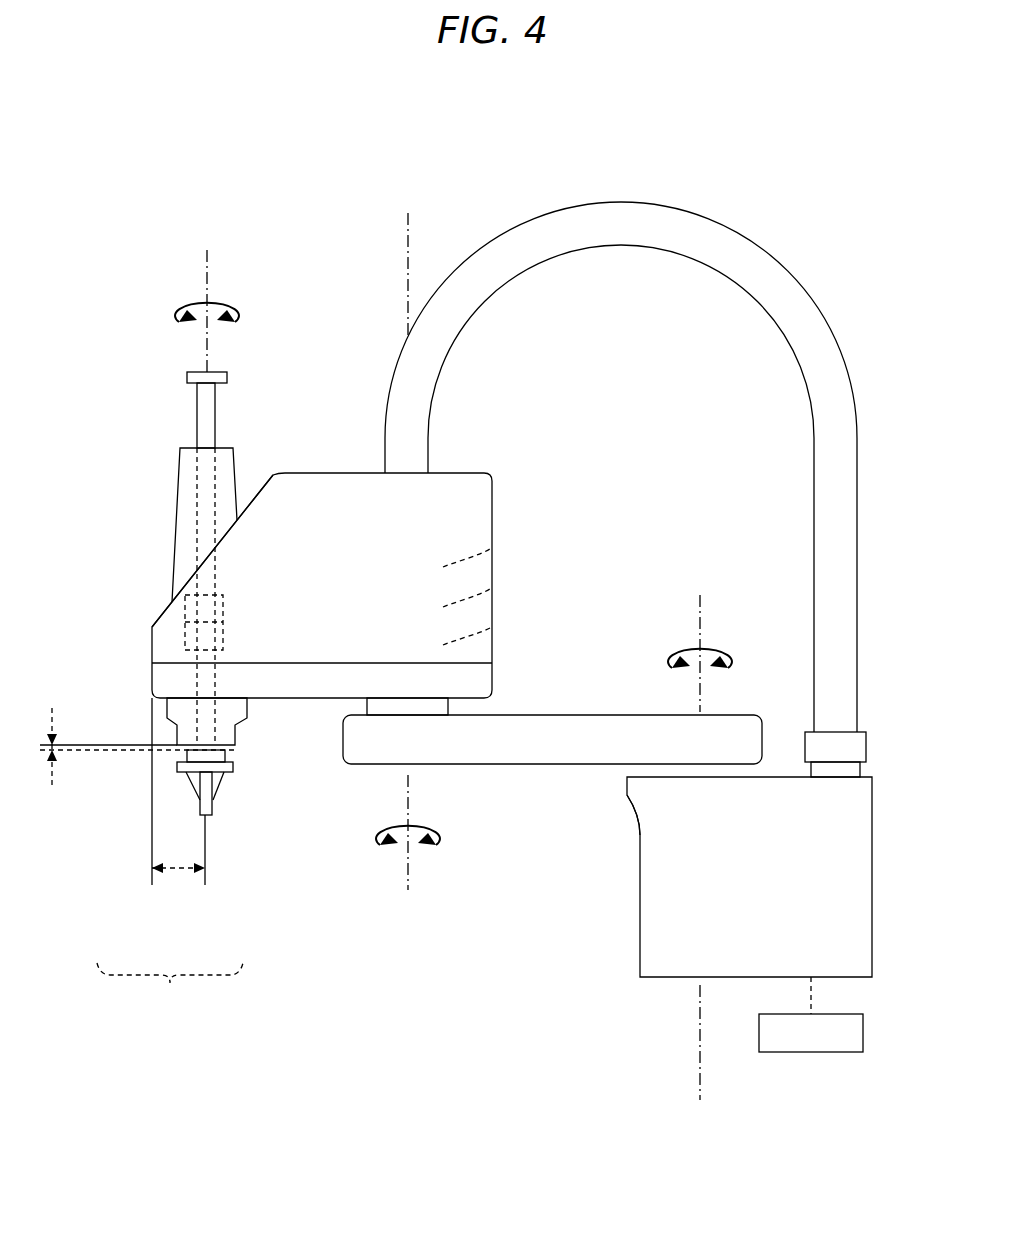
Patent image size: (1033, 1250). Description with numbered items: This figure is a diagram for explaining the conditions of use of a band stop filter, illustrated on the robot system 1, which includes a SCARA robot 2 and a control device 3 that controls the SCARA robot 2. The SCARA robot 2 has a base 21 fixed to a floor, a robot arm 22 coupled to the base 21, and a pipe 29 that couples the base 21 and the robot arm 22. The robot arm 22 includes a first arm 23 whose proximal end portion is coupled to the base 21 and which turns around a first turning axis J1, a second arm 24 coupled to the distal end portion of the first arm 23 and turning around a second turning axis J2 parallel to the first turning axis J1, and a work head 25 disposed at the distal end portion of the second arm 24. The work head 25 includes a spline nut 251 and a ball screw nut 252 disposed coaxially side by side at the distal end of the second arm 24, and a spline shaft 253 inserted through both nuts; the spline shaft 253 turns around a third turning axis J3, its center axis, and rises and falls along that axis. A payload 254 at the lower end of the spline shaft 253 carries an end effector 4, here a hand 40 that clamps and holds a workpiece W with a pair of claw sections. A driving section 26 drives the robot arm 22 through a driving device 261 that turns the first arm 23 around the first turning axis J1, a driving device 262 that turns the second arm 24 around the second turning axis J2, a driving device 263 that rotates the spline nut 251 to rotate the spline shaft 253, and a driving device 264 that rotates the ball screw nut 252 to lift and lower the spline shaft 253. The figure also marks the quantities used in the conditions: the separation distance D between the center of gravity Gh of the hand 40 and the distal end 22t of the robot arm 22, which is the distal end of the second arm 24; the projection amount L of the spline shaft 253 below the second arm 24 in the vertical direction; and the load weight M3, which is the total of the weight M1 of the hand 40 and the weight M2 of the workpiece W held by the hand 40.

The robot system 1 is at (817, 81).
The SCARA robot 2 is at (628, 444).
The control device 3 is at (813, 1052).
The end effector 4 is at (249, 778).
The hand 40 is at (233, 766).
The base 21 is at (872, 877).
The robot arm 22 is at (552, 752).
The distal end 22t is at (152, 676).
The first arm 23 is at (577, 735).
The second arm 24 is at (288, 490).
The work head 25 is at (168, 505).
The spline nut 251 is at (166, 598).
The ball screw nut 252 is at (186, 636).
The spline shaft 253 is at (206, 412).
The payload 254 is at (180, 763).
The driving section 26 is at (574, 702).
The driving device 261 is at (705, 801).
The driving device 262 is at (493, 632).
The driving device 263 is at (493, 583).
The driving device 264 is at (493, 528).
The pipe 29 is at (788, 284).
The first turning axis J1 is at (703, 606).
The second turning axis J2 is at (410, 872).
The third turning axis J3 is at (209, 262).
The projection amount L is at (137, 759).
The separation distance D is at (178, 882).
The workpiece W is at (200, 802).
The center of gravity Gh is at (220, 792).
The weight of the hand M1 is at (187, 757).
The weight of the workpiece M2 is at (205, 792).
The load weight M3 is at (170, 988).